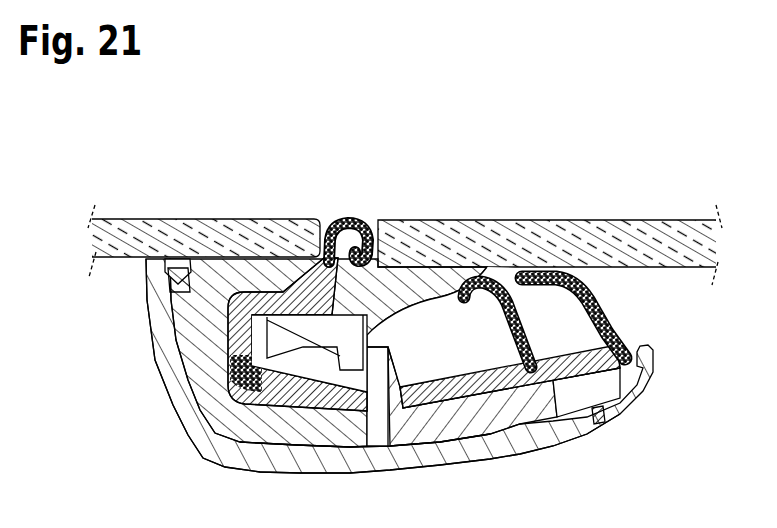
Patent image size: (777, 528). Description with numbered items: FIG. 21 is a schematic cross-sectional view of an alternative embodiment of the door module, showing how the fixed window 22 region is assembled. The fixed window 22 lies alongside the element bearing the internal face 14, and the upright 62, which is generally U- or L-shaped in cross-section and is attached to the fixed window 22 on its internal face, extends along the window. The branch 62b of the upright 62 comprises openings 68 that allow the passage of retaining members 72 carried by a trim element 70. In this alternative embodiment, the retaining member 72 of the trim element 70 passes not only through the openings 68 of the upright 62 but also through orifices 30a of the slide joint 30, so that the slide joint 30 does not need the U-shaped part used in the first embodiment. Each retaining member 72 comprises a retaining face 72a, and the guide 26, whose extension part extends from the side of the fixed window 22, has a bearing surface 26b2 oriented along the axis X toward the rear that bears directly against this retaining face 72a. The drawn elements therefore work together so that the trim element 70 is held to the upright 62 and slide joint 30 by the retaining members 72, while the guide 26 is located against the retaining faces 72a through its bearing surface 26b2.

The internal face 14 is at (545, 212).
The fixed window 22 is at (267, 203).
The guide 26 is at (400, 285).
The bearing surface 26b2 is at (297, 473).
The slide joint 30 is at (662, 327).
The orifices 30a is at (452, 372).
The upright 62 is at (604, 420).
The branch 62b is at (229, 455).
The openings 68 is at (410, 432).
The trim element 70 is at (551, 480).
The retaining member 72 is at (361, 473).
The retaining face 72a is at (343, 325).